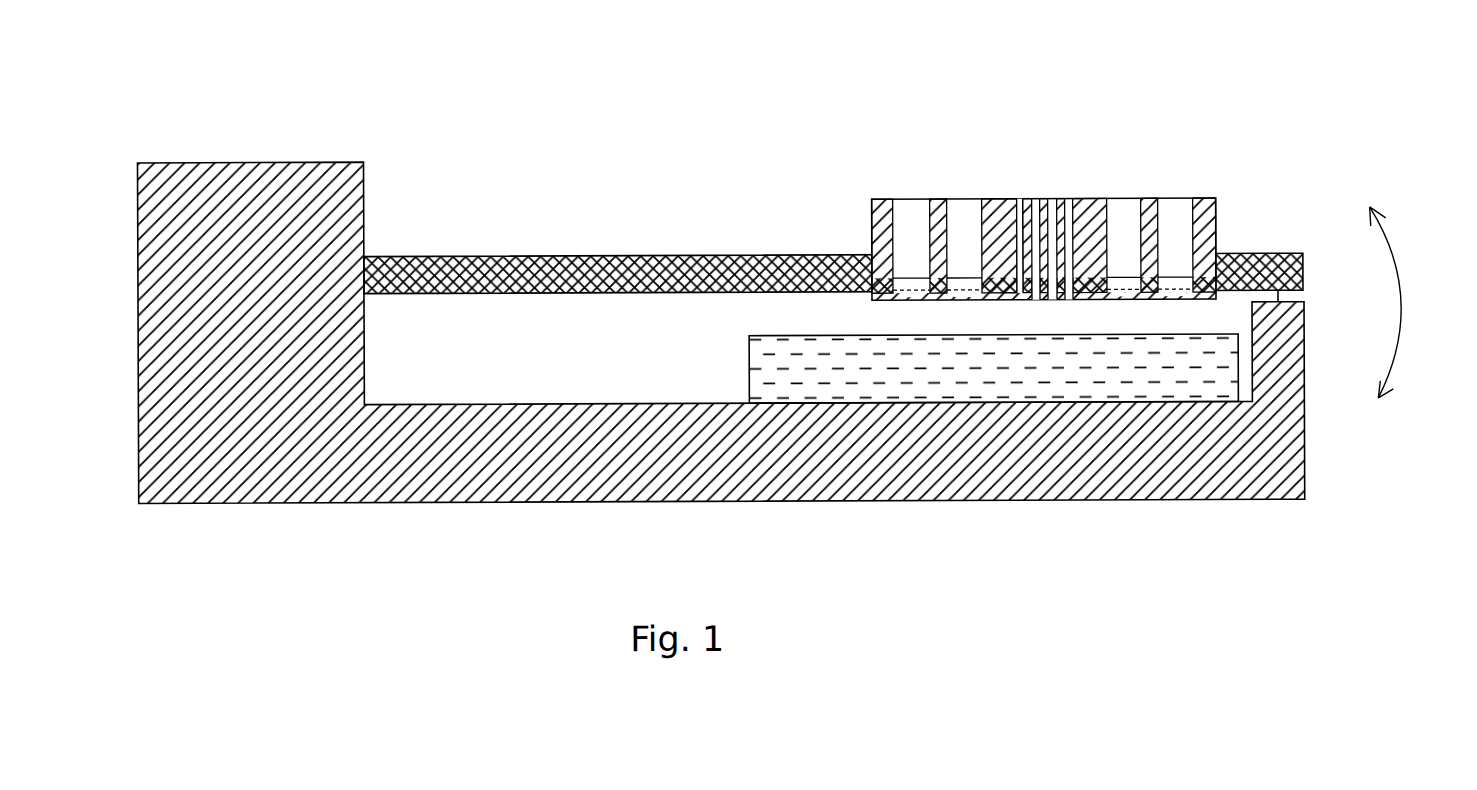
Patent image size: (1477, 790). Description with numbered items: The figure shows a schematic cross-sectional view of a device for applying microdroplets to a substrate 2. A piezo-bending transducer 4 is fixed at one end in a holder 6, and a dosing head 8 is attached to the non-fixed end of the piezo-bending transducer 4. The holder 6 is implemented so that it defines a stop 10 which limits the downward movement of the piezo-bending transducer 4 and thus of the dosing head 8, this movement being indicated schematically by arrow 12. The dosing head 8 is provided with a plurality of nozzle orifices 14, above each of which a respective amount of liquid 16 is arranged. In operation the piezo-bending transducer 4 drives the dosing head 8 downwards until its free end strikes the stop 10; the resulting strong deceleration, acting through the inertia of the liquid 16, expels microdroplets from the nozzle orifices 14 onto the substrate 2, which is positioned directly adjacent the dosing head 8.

The substrate 2 is at (808, 362).
The piezo-bending transducer 4 is at (585, 259).
The holder 6 is at (253, 162).
The dosing head 8 is at (1097, 207).
The stop 10 is at (1278, 293).
The arrow 12 is at (1415, 302).
The nozzle orifices 14 is at (1034, 302).
The amount of liquid 16 is at (1020, 292).